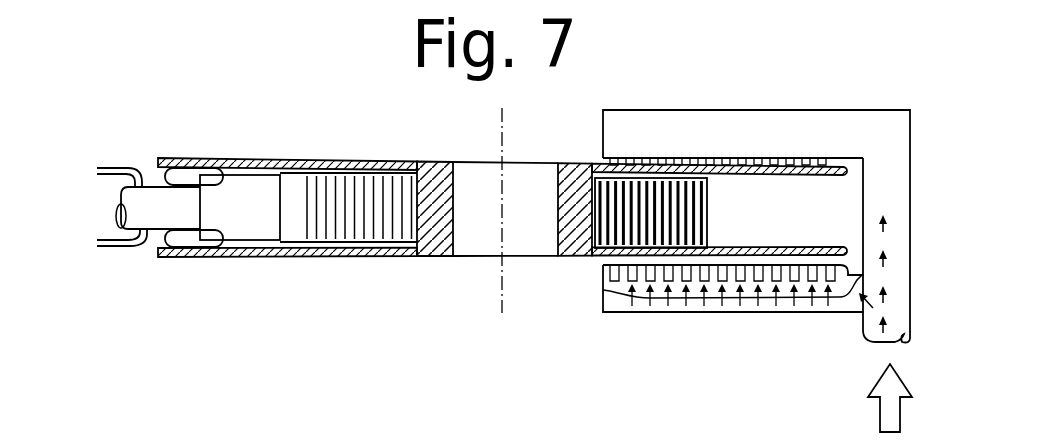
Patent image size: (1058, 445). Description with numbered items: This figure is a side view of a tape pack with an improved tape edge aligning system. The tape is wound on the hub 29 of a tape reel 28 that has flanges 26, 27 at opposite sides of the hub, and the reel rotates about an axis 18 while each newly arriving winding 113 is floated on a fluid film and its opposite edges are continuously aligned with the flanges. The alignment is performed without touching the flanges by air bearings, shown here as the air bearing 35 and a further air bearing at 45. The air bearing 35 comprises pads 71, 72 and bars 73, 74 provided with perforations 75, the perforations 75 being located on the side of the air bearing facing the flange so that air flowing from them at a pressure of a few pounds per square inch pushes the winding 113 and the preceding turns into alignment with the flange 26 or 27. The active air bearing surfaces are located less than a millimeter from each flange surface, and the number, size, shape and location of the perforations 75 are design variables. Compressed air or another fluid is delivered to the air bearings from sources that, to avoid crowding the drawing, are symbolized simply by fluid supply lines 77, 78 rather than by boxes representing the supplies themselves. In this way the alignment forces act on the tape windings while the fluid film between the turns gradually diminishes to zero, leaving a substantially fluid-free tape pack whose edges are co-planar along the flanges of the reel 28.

The axis of rotation 18 is at (500, 130).
The reel flange 26 is at (346, 160).
The reel flange 27 is at (302, 258).
The tape reel 28 is at (400, 285).
The hub 29 is at (551, 209).
The air bearing 35 is at (768, 90).
The air bearing 45 is at (152, 148).
The pad 71 is at (190, 160).
The pad 72 is at (187, 238).
The bar 73 is at (640, 118).
The bar 74 is at (638, 312).
The perforations 75 is at (754, 283).
The fluid supply line 77 is at (118, 165).
The fluid supply line 78 is at (110, 250).
The newly arriving winding 113 is at (707, 215).